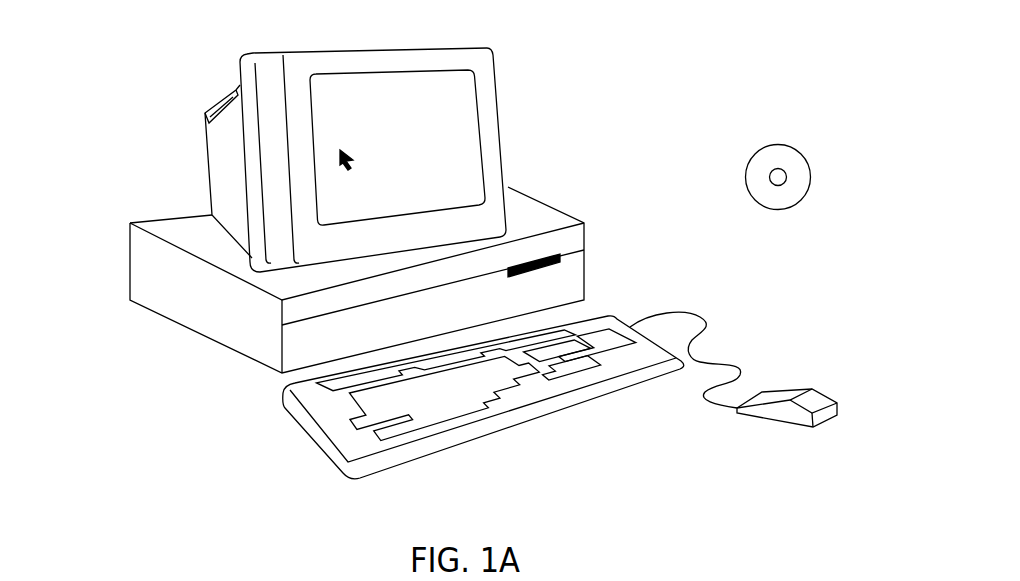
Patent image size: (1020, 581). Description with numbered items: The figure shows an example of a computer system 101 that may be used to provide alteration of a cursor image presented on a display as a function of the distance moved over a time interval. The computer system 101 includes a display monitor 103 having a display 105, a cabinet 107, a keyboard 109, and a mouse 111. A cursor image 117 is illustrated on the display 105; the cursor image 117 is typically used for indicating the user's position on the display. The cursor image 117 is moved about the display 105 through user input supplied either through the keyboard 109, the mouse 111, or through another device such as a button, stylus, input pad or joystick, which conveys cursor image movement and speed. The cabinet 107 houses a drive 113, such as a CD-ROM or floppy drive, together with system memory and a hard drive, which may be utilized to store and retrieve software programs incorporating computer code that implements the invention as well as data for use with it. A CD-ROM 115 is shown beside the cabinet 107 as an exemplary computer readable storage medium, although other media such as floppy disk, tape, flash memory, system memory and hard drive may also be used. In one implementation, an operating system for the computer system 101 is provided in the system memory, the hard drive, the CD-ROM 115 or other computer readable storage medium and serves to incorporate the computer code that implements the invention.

The computer system 101 is at (701, 26).
The display monitor 103 is at (500, 158).
The display 105 is at (462, 110).
The cabinet 107 is at (240, 353).
The keyboard 109 is at (480, 437).
The mouse 111 is at (828, 395).
The drive 113 is at (562, 253).
The CD-ROM 115 is at (795, 147).
The cursor image 117 is at (340, 153).